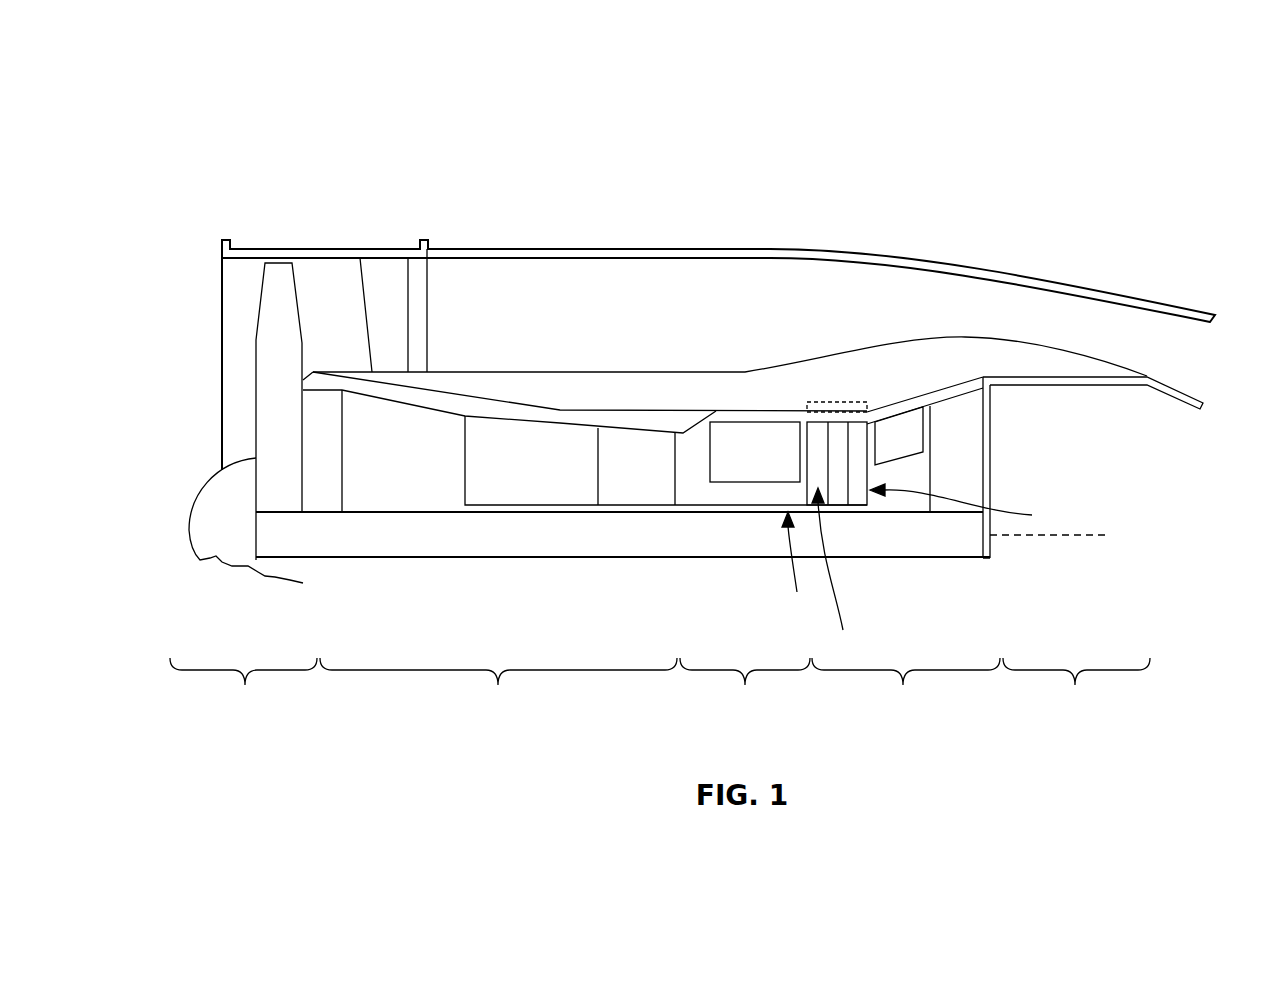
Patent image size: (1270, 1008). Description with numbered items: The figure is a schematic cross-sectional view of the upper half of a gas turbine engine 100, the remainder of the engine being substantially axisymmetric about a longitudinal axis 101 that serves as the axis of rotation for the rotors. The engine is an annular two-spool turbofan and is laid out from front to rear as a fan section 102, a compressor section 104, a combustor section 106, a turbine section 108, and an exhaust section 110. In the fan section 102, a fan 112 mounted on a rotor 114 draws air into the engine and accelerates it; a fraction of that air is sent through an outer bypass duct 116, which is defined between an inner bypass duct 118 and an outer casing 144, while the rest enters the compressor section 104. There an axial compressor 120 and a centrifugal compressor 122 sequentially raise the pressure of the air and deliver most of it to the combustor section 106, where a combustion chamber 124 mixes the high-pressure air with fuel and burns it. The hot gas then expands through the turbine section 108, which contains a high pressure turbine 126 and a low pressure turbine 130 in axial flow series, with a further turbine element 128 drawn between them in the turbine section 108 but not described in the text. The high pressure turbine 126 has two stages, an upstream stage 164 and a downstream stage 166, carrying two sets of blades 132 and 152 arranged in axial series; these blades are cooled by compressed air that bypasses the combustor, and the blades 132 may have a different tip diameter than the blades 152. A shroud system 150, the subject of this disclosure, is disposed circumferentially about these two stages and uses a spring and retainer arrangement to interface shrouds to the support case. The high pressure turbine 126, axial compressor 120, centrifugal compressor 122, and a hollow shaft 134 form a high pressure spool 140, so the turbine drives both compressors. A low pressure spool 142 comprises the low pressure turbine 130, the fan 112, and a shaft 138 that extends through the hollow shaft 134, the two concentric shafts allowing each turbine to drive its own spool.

The gas turbine engine 100 is at (220, 150).
The longitudinal axis 101 is at (1057, 537).
The fan section 102 is at (243, 692).
The compressor section 104 is at (498, 692).
The combustor section 106 is at (745, 691).
The turbine section 108 is at (906, 691).
The exhaust section 110 is at (1076, 691).
The fan 112 is at (270, 389).
The rotor 114 is at (290, 543).
The outer bypass duct 116 is at (634, 265).
The inner bypass duct 118 is at (643, 420).
The axial compressor 120 is at (543, 493).
The centrifugal compressor 122 is at (638, 493).
The combustion chamber 124 is at (745, 440).
The high pressure turbine 126 is at (838, 438).
The low pressure turbine 128 is at (890, 430).
The low pressure turbine 130 is at (973, 432).
The blades 132 is at (813, 470).
The shaft 134 is at (722, 515).
The shaft 138 is at (865, 545).
The high pressure spool 140 is at (805, 568).
The low pressure spool 142 is at (940, 547).
The outer casing 144 is at (787, 252).
The shroud system 150 is at (822, 390).
The blades 152 is at (857, 473).
The upstream stage 164 is at (842, 572).
The downstream stage 166 is at (979, 507).